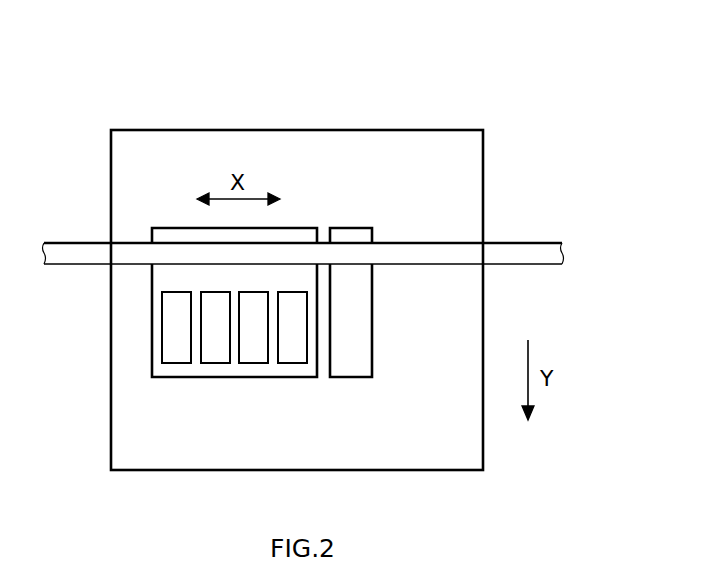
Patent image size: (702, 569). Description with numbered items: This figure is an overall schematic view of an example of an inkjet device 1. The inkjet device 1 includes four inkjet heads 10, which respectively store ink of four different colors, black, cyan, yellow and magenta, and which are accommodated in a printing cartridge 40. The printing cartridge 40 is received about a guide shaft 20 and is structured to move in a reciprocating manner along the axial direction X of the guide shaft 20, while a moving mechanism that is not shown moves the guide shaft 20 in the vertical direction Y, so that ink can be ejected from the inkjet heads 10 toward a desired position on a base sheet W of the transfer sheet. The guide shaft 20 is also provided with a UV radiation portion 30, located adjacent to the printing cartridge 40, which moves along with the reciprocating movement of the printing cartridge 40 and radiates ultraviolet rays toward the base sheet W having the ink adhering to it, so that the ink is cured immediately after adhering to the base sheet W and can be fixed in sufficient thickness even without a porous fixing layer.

The inkjet device 1 is at (492, 74).
The inkjet heads 10 is at (216, 363).
The guide shaft 20 is at (523, 250).
The UV radiation portion 30 is at (363, 307).
The printing cartridge 40 is at (295, 236).
The base sheet W is at (470, 151).